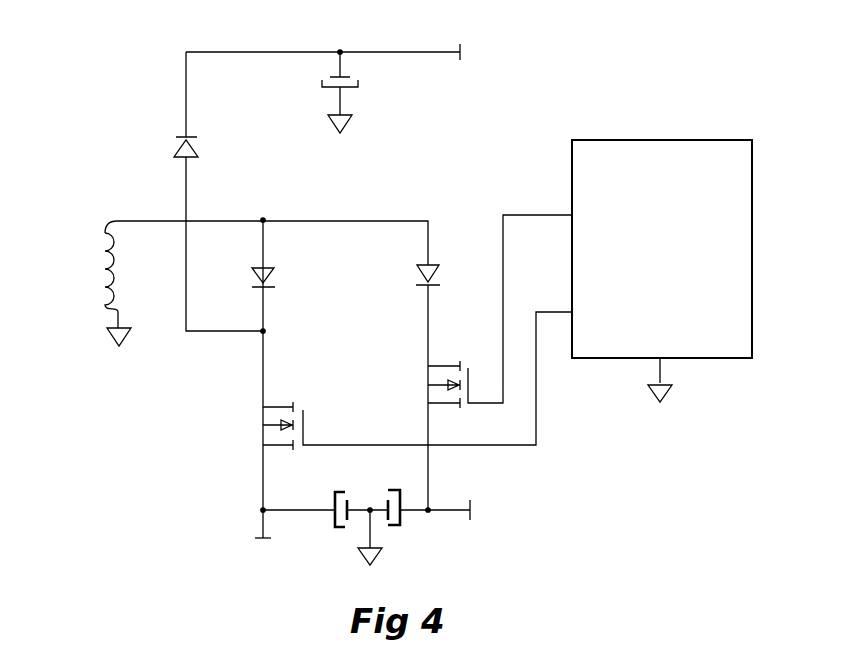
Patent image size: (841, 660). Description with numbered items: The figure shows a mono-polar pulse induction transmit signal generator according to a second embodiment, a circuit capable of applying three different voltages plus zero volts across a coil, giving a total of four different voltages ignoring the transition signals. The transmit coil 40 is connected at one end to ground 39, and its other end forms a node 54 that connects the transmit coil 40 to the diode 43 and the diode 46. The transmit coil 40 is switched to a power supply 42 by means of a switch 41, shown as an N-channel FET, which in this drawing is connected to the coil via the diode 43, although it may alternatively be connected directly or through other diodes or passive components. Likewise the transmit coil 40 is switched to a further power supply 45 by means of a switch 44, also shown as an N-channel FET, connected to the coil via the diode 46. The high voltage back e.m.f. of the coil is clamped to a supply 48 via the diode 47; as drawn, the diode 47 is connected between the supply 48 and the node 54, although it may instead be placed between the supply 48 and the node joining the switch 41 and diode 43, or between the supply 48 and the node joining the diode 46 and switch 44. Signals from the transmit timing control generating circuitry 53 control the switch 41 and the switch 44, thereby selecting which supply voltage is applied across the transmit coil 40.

The ground 39 is at (112, 341).
The transmit coil 40 is at (98, 252).
The switch 41 is at (262, 433).
The power supply 42 is at (262, 541).
The diode 43 is at (277, 275).
The switch 44 is at (428, 393).
The power supply 45 is at (472, 510).
The diode 46 is at (440, 272).
The diode 47 is at (178, 152).
The supply 48 is at (462, 52).
The transmit timing control generating circuitry 53 is at (623, 139).
The node 54 is at (130, 220).